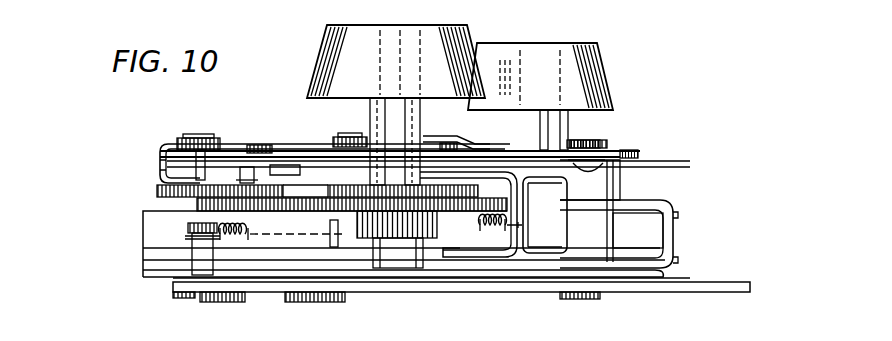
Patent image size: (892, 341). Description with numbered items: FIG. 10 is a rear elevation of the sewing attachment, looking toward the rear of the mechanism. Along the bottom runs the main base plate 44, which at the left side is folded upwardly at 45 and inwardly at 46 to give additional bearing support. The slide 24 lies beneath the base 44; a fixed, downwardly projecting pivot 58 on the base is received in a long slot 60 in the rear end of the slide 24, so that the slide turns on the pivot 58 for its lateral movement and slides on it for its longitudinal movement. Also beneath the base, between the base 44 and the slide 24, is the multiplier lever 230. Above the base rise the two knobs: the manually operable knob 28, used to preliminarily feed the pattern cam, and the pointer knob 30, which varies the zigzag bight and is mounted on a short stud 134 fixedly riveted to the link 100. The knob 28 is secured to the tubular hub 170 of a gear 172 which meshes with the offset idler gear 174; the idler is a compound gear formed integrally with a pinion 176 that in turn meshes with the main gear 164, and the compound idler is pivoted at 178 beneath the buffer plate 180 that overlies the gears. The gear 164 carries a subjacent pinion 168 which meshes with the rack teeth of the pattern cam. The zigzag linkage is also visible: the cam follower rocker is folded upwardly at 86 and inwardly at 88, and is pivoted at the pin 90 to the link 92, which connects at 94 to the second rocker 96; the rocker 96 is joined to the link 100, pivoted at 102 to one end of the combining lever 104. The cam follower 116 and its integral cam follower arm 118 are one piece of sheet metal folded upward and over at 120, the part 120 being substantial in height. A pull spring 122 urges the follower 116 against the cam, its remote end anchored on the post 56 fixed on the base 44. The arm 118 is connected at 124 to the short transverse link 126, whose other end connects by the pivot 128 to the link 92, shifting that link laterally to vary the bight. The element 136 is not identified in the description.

The slide 24 is at (720, 293).
The manually operable knob 28 is at (393, 35).
The pointer knob 30 is at (571, 50).
The main base plate 44 is at (662, 277).
The upward fold of base plate 45 is at (676, 230).
The inward fold of base plate 46 is at (633, 200).
The post 56 is at (198, 250).
The pivot 58 is at (298, 303).
The slot 60 is at (226, 302).
The upward fold of rocker 86 is at (160, 166).
The inward fold of rocker 88 is at (178, 146).
The pin 90 is at (210, 130).
The link 92 is at (285, 157).
The connection 94 is at (347, 136).
The second rocker 96 is at (330, 150).
The link 100 is at (642, 151).
The pivot 102 is at (608, 140).
The combining lever 104 is at (610, 182).
The cam follower 116 is at (465, 258).
The cam follower arm 118 is at (490, 150).
The folded portion 120 is at (550, 232).
The pull spring 122 is at (478, 227).
The connection 124 is at (197, 201).
The short transverse link 126 is at (247, 183).
The pivot 128 is at (268, 138).
The stud 134 is at (567, 115).
The mounting block 136 is at (455, 136).
The gear 164 is at (282, 233).
The pinion 168 is at (360, 240).
The tubular shaft or hub 170 is at (381, 122).
The gear 172 is at (330, 191).
The offset idler gear 174 is at (160, 186).
The pinion 176 is at (240, 218).
The pivot 178 is at (250, 186).
The buffer plate 180 is at (410, 175).
The multiplier lever 230 is at (412, 286).